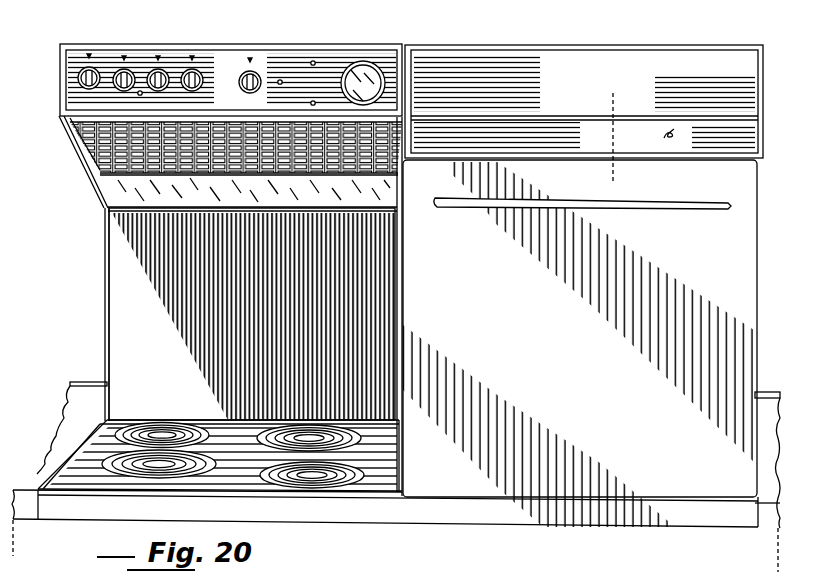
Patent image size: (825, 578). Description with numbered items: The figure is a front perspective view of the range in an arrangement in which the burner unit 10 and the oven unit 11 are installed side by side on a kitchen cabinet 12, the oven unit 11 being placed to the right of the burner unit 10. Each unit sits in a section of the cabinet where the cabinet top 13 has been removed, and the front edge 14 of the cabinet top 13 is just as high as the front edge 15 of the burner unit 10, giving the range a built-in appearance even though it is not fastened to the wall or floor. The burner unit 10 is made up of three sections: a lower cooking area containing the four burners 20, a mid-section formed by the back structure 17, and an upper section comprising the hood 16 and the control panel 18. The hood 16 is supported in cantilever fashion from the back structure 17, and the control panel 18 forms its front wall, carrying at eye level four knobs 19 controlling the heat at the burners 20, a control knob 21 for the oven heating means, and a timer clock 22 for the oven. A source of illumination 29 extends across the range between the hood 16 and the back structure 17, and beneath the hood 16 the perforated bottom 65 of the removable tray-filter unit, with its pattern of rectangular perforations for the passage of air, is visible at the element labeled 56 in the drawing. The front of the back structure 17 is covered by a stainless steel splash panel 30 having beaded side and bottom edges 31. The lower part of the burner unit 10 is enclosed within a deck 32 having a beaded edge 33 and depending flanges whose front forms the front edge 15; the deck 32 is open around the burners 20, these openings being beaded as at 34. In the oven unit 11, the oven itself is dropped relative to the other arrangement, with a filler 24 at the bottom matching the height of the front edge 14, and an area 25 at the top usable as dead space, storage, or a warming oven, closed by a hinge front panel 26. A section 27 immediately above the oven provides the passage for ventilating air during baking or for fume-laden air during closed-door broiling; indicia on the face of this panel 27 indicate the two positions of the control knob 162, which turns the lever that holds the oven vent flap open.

The burner unit 10 is at (127, 334).
The oven unit 11 is at (546, 359).
The kitchen cabinet 12 is at (46, 460).
The cabinet top 13 is at (47, 458).
The front edge of cabinet top 14 is at (27, 521).
The front edge of burner unit 15 is at (217, 470).
The hood portion 16 is at (84, 165).
The back structure 17 is at (366, 287).
The control panel 18 is at (288, 68).
The knobs 19 is at (113, 66).
The burners 20 is at (268, 441).
The control knob for the oven heating means 21 is at (246, 68).
The timer clock 22 is at (634, 99).
The filler 24 is at (499, 522).
The area 25 is at (742, 86).
The hinge front panel 26 is at (573, 65).
The section 27 is at (364, 66).
The source of illumination 29 is at (112, 196).
The splash panel 30 is at (252, 314).
The beaded side and bottom edges 31 is at (399, 301).
The deck 32 is at (243, 482).
The beaded edge 33 is at (90, 436).
The beaded edges of burner openings 34 is at (208, 462).
The vent grille 56 is at (117, 152).
The bottom of the tray 65 is at (103, 130).
The control knob 162 is at (654, 141).